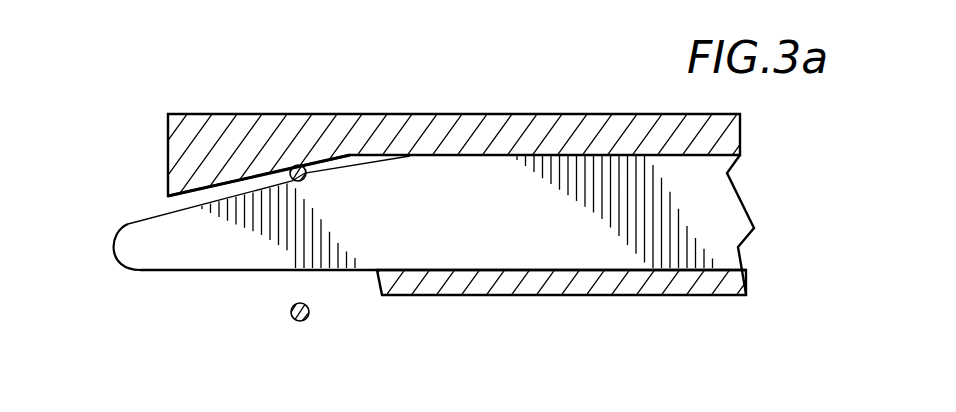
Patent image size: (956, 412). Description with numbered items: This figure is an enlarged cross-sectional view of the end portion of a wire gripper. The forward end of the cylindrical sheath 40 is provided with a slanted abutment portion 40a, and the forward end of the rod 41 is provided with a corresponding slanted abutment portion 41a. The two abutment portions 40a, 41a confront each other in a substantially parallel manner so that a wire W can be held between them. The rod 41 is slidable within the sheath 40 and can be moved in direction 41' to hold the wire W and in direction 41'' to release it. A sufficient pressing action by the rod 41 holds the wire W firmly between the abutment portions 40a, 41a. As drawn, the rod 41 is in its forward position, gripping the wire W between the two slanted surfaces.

The cylindrical sheath 40 is at (510, 132).
The slanted abutment portion 40a is at (232, 168).
The wire W is at (284, 175).
The rod 41 is at (435, 247).
The slanted abutment portion 41a is at (217, 213).
The direction 41' is at (782, 235).
The direction 41'' is at (858, 235).